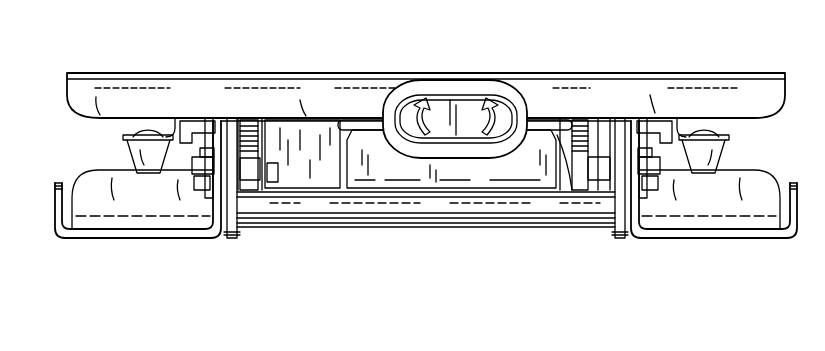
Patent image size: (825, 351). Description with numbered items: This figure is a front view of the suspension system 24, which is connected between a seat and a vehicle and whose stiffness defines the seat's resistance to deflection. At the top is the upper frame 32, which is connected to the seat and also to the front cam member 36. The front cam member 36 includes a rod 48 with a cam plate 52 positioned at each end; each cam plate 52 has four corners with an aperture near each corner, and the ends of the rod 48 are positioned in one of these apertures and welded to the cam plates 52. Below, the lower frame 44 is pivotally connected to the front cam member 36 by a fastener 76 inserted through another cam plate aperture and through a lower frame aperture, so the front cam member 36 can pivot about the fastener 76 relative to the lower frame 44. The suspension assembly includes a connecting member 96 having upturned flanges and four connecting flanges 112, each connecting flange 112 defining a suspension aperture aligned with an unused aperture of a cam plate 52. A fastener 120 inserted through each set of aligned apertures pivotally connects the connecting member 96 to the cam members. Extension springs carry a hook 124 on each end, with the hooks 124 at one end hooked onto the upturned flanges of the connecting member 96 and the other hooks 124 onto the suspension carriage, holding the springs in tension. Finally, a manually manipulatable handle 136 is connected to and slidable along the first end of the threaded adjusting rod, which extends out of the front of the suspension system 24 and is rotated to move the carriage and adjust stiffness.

The suspension system 24 is at (736, 30).
The upper frame 32 is at (66, 89).
The front cam member 36 is at (400, 228).
The lower frame 44 is at (120, 240).
The rod 48 is at (538, 212).
The cam plate 52 is at (232, 239).
The fastener 76 is at (200, 192).
The connecting member 96 is at (444, 168).
The connecting flange 112 is at (259, 130).
The fastener 120 is at (272, 175).
The hook 124 is at (367, 127).
The handle 136 is at (441, 90).